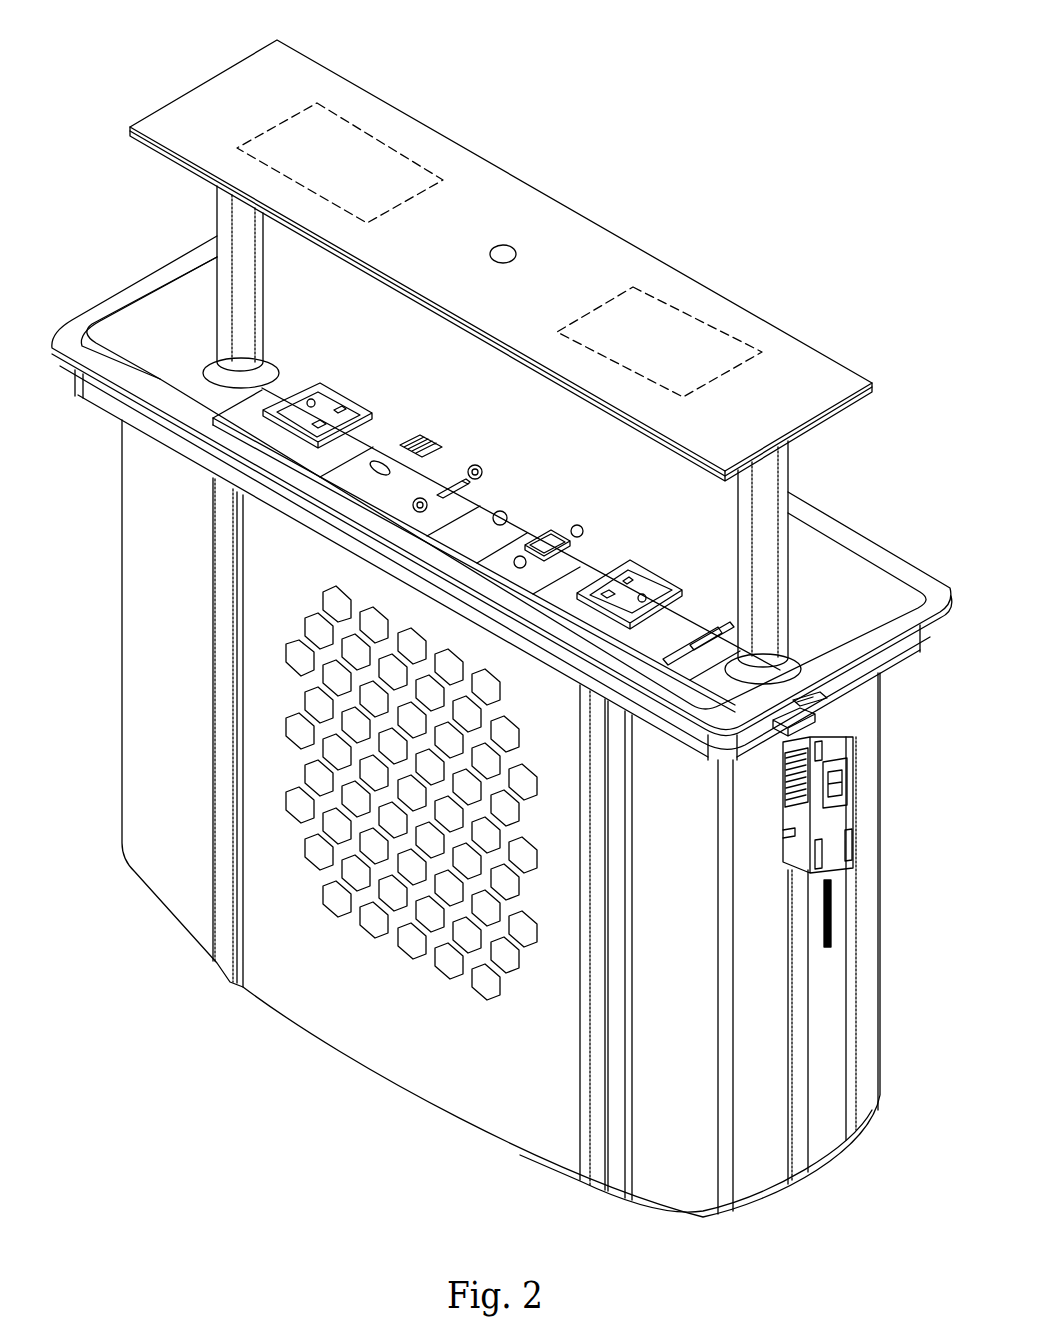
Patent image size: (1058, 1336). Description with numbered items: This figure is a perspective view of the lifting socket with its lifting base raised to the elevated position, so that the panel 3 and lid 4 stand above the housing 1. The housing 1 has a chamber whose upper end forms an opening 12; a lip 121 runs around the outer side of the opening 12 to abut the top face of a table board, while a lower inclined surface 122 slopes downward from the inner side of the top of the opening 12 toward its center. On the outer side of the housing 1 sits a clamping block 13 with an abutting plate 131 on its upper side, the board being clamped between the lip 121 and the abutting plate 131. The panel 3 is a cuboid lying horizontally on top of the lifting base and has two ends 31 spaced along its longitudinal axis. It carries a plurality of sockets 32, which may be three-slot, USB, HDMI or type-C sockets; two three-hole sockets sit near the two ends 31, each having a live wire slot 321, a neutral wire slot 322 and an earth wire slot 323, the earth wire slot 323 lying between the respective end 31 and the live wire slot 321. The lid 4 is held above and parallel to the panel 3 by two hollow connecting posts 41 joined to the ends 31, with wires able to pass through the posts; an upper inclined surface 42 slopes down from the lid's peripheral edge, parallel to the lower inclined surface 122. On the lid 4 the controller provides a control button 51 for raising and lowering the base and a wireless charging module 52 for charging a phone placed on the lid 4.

The housing 1 is at (904, 818).
The opening 12 is at (498, 482).
The lip 121 is at (95, 318).
The lower inclined surface 122 is at (130, 320).
The clamping block 13 is at (874, 773).
The abutting plate 131 is at (850, 722).
The panel 3 is at (408, 409).
The end 31 is at (197, 392).
The socket 32 is at (322, 405).
The live wire slot 321 is at (345, 415).
The neutral wire slot 322 is at (330, 422).
The earth wire slot 323 is at (313, 400).
The lid 4 is at (498, 353).
The connecting post 41 is at (226, 232).
The upper inclined surface 42 is at (186, 170).
The control button 51 is at (505, 243).
The wireless charging module 52 is at (335, 130).